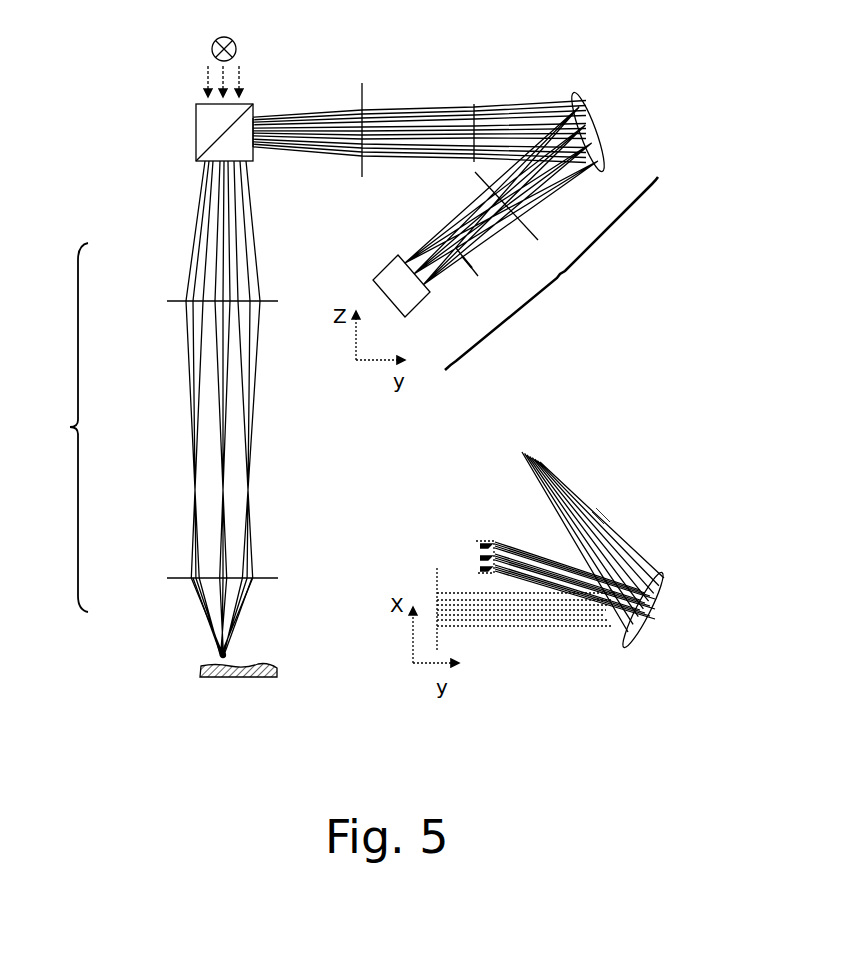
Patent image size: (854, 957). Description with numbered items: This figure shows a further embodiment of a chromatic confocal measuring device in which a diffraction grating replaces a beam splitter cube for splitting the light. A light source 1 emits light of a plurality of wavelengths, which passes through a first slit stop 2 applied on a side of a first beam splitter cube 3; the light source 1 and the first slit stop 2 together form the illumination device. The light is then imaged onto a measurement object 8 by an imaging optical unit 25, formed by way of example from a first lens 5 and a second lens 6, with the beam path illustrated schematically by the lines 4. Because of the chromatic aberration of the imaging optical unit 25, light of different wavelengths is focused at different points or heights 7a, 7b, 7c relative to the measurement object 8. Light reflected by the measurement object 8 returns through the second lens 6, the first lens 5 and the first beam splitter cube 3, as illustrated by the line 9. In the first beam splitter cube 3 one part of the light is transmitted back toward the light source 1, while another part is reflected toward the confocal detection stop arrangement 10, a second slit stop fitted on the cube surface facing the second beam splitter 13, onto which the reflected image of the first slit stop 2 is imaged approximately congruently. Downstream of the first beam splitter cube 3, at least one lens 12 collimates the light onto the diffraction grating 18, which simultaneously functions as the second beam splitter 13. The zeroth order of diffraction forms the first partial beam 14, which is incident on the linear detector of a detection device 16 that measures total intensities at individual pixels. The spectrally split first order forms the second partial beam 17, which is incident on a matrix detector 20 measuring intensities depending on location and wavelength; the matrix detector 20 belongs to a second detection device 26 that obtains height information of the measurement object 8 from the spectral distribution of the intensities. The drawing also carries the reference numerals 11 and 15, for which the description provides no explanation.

The light source 1 is at (212, 42).
The first slit stop 2 is at (196, 105).
The first beam splitter cube 3 is at (196, 140).
The lines 4 is at (198, 222).
The first lens 5 is at (172, 299).
The second lens 6 is at (166, 577).
The focus point 7a is at (236, 598).
The focus point 7b is at (232, 658).
The focus point 7c is at (202, 630).
The measurement object 8 is at (196, 668).
The line 9 is at (246, 228).
The confocal detection stop arrangement 10 is at (253, 110).
The detection beam 11 is at (320, 155).
The lens 12 is at (362, 83).
The second beam splitter 13 is at (607, 128).
The first partial beam 14 is at (503, 250).
The beam section 15 is at (530, 224).
The detection device 16 is at (475, 277).
The second partial beam 17 is at (425, 247).
The diffraction grating 18 is at (653, 610).
The matrix detector 20 is at (477, 558).
The imaging optical unit 25 is at (59, 427).
The second detection device 26 is at (551, 273).